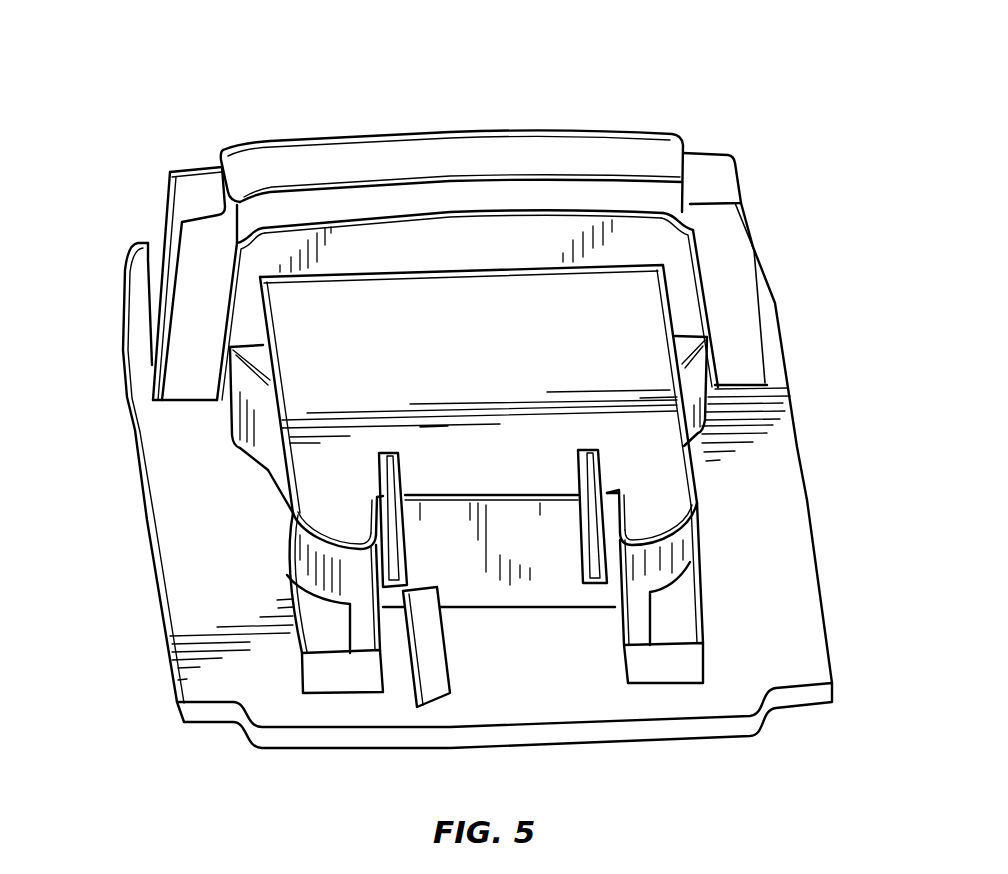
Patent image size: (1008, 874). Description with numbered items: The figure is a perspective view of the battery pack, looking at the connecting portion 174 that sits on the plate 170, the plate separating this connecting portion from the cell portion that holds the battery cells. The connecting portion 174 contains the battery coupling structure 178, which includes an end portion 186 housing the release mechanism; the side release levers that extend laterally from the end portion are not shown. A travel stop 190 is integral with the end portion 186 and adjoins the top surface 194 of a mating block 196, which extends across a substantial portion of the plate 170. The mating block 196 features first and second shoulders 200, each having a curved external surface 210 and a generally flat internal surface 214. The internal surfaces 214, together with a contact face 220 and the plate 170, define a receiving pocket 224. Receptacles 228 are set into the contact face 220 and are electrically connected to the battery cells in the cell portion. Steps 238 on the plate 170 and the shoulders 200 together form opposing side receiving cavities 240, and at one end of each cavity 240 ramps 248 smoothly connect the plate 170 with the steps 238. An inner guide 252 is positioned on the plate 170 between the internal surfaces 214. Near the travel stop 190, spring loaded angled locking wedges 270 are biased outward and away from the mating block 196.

The plate 170 is at (780, 490).
The connecting portion 174 is at (100, 113).
The battery coupling structure 178 is at (142, 350).
The end portion 186 is at (560, 150).
The travel stop 190 is at (723, 218).
The top surface 194 is at (500, 323).
The mating block 196 is at (265, 485).
The shoulders 200 is at (497, 637).
The curved external surface 210 is at (320, 564).
The internal surface 214 is at (377, 524).
The contact face 220 is at (543, 551).
The receiving pocket 224 is at (570, 678).
The receptacles 228 is at (394, 462).
The steps 238 is at (290, 627).
The side receiving cavities 240 is at (318, 632).
The ramps 248 is at (343, 680).
The inner guide 252 is at (430, 699).
The locking wedges 270 is at (253, 397).